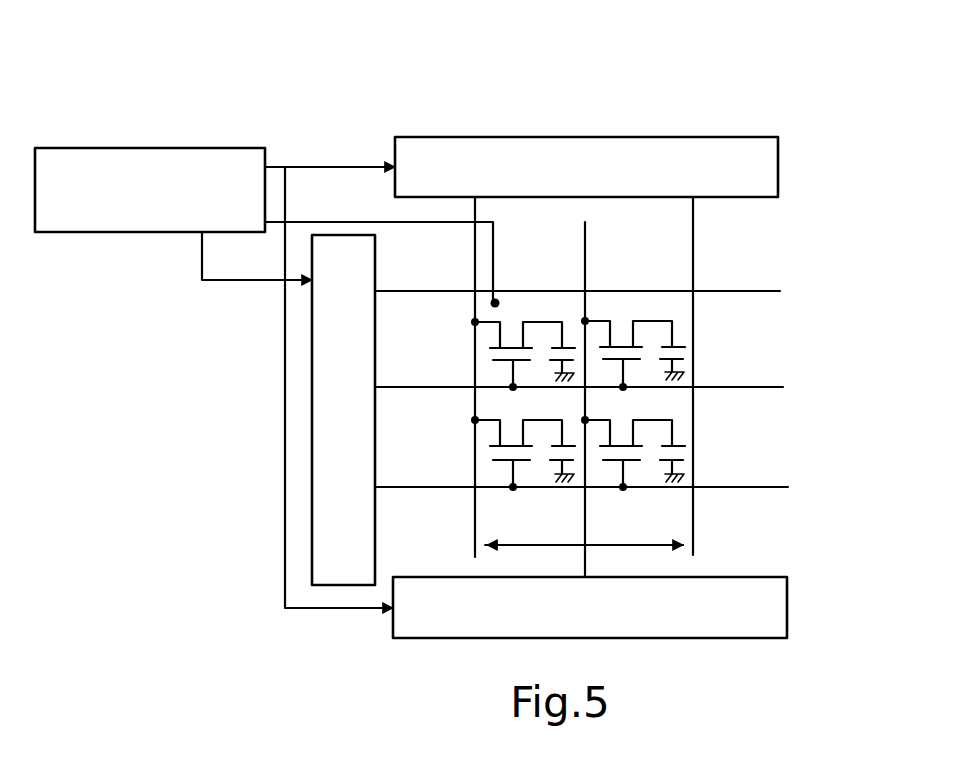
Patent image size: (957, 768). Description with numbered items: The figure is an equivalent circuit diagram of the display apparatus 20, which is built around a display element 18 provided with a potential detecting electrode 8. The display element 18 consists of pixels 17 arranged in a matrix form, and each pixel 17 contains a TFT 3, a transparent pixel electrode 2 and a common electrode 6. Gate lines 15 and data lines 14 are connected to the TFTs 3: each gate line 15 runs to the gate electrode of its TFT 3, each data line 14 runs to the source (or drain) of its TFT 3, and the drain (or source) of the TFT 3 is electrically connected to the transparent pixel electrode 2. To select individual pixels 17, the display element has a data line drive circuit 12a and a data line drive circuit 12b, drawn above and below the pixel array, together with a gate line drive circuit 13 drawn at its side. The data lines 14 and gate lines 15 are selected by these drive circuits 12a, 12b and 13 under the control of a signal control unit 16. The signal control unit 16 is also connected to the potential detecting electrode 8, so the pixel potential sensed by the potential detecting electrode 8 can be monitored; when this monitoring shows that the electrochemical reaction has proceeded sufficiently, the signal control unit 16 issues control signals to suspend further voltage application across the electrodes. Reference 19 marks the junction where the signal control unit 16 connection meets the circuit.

The transparent pixel electrode 2 is at (680, 448).
The TFT 3 is at (621, 412).
The common electrode 6 is at (666, 465).
The potential detecting electrode 8 is at (497, 230).
The data line drive circuit 12a is at (770, 162).
The data line drive circuit 12b is at (426, 630).
The gate line drive circuit 13 is at (326, 505).
The data line 14 is at (594, 528).
The gate line 15 is at (770, 294).
The signal control unit 16 is at (127, 157).
The pixel 17 is at (690, 347).
The display element 18 is at (720, 230).
The gate line 19 is at (505, 300).
The display apparatus 20 is at (722, 118).